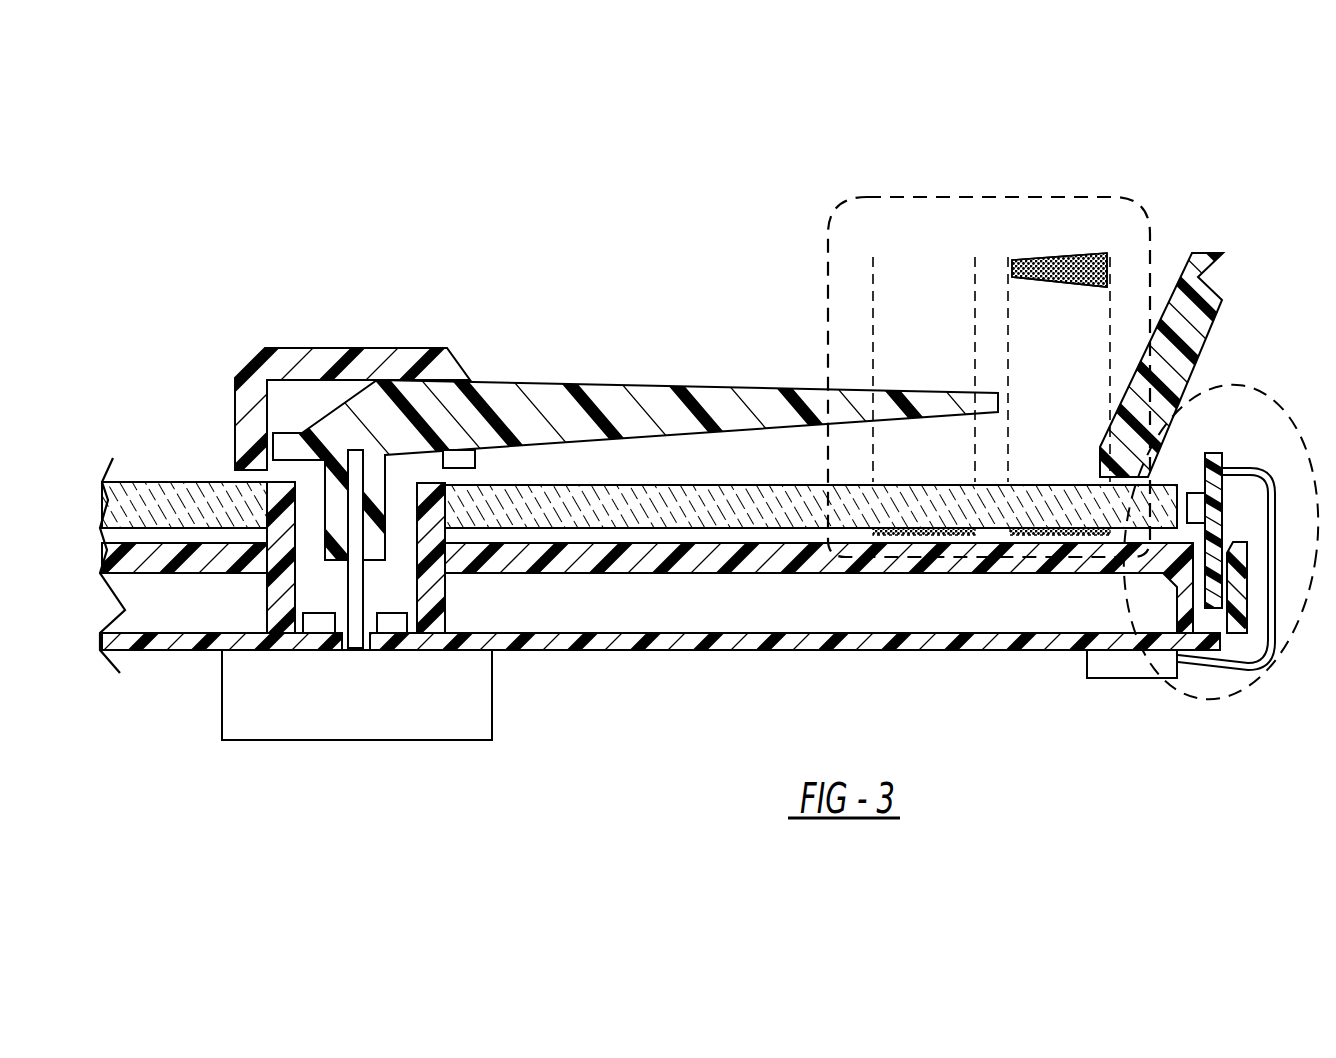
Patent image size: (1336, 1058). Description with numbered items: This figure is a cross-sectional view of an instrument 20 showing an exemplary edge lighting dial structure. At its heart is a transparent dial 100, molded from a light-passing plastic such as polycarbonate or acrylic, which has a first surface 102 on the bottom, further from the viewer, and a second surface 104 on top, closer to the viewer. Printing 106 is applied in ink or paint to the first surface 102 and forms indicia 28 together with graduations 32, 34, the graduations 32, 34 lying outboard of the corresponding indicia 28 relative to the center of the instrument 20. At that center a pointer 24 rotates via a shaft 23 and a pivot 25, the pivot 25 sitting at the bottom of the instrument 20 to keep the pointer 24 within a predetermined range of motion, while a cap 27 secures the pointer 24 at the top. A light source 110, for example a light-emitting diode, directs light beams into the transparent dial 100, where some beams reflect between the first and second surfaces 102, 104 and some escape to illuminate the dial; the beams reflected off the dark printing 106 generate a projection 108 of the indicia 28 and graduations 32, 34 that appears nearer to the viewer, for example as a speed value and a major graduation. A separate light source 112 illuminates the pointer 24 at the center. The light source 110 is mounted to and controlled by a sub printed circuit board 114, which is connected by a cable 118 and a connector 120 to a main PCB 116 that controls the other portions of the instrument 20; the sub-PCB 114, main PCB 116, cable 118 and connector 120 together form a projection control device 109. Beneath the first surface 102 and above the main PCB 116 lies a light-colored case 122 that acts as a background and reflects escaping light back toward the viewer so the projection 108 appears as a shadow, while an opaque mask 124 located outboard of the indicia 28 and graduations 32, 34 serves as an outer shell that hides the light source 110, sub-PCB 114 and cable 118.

The instrument 20 is at (288, 250).
The shaft 23 is at (367, 580).
The pointer 24 is at (543, 377).
The pivot 25 is at (388, 708).
The cap 27 is at (227, 407).
The indicia 28 is at (907, 227).
The graduation 32 is at (1075, 237).
The graduation 34 is at (1059, 270).
The transparent dial 100 is at (662, 503).
The first surface 102 is at (748, 530).
The second surface 104 is at (757, 483).
The printing 106 is at (920, 536).
The projection 108 is at (1002, 197).
The projection control device 109 is at (1252, 385).
The light source 110 is at (1185, 483).
The light source 112 is at (307, 637).
The printed circuit board 114 is at (1212, 562).
The PCB 116 is at (190, 638).
The cable 118 is at (1282, 477).
The connector 120 is at (1117, 747).
The case 122 is at (598, 562).
The mask 124 is at (1180, 297).